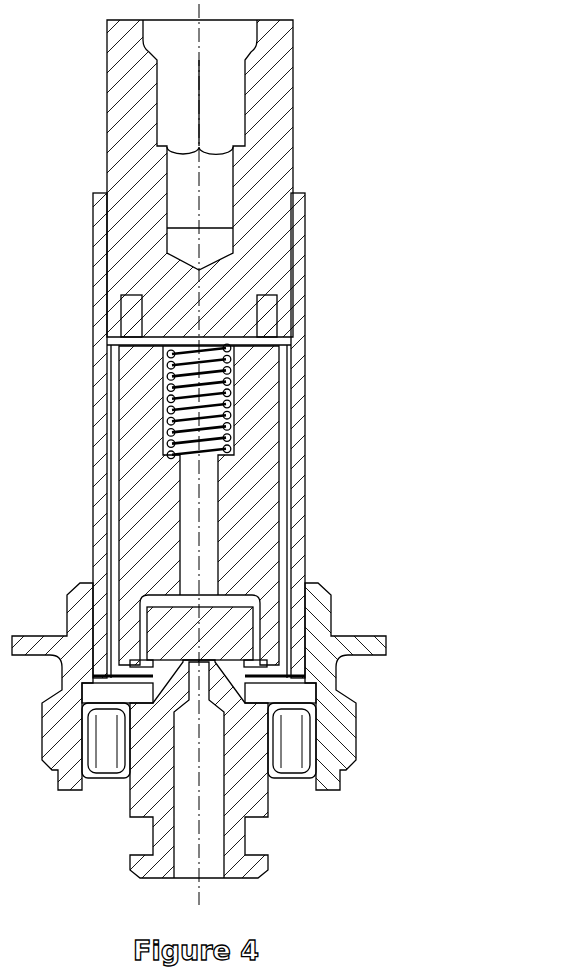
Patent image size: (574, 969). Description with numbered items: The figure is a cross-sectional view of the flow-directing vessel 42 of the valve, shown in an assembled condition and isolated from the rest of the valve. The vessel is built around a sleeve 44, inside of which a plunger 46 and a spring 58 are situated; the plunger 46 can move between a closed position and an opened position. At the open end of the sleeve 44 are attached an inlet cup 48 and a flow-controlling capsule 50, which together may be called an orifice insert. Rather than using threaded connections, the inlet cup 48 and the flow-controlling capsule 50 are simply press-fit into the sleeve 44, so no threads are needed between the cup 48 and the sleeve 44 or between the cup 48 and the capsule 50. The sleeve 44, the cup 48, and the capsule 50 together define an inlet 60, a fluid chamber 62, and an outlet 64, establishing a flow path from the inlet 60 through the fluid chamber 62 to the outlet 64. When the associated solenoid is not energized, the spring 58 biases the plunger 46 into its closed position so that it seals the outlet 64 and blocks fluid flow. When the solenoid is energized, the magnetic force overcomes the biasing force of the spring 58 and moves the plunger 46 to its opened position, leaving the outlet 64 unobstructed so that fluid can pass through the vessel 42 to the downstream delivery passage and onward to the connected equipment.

The flow-directing vessel 42 is at (330, 274).
The sleeve 44 is at (298, 237).
The plunger 46 is at (247, 478).
The inlet cup 48 is at (312, 738).
The flow-controlling capsule 50 is at (245, 807).
The spring 58 is at (227, 392).
The inlet 60 is at (115, 690).
The fluid chamber 62 is at (282, 667).
The outlet 64 is at (205, 650).